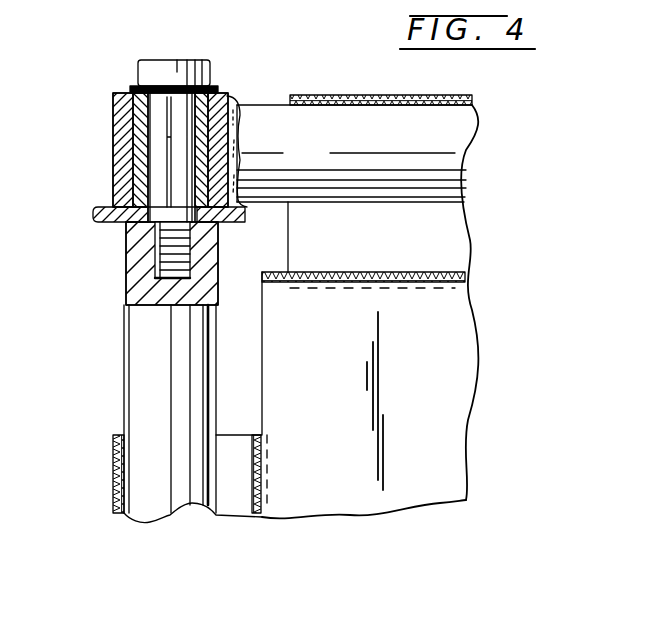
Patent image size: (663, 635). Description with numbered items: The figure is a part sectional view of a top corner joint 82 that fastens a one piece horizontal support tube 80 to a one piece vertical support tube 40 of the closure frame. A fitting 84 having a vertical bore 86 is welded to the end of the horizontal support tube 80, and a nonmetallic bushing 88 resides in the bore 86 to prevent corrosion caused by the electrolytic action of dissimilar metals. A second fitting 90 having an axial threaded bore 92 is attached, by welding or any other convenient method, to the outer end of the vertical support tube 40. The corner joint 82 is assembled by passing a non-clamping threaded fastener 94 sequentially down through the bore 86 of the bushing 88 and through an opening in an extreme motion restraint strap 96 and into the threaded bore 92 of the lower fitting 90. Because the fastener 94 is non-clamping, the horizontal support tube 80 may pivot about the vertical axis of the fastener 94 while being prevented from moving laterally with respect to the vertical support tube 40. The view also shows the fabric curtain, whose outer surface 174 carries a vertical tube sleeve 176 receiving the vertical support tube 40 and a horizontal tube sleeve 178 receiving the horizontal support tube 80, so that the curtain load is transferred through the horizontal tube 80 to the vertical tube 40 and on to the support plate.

The vertical support tube 40 is at (130, 368).
The horizontal support tube 80 is at (467, 132).
The top corner joint 82 is at (129, 78).
The fitting 84 is at (115, 110).
The vertical bore 86 is at (135, 133).
The nonmetallic bushing 88 is at (140, 166).
The fitting 90 is at (127, 292).
The threaded bore 92 is at (130, 249).
The non-clamping threaded fastener 94 is at (180, 58).
The extreme motion restraint strap 96 is at (100, 213).
The outer surface 174 is at (450, 272).
The vertical tube sleeve 176 is at (113, 458).
The horizontal tube sleeve 178 is at (465, 98).